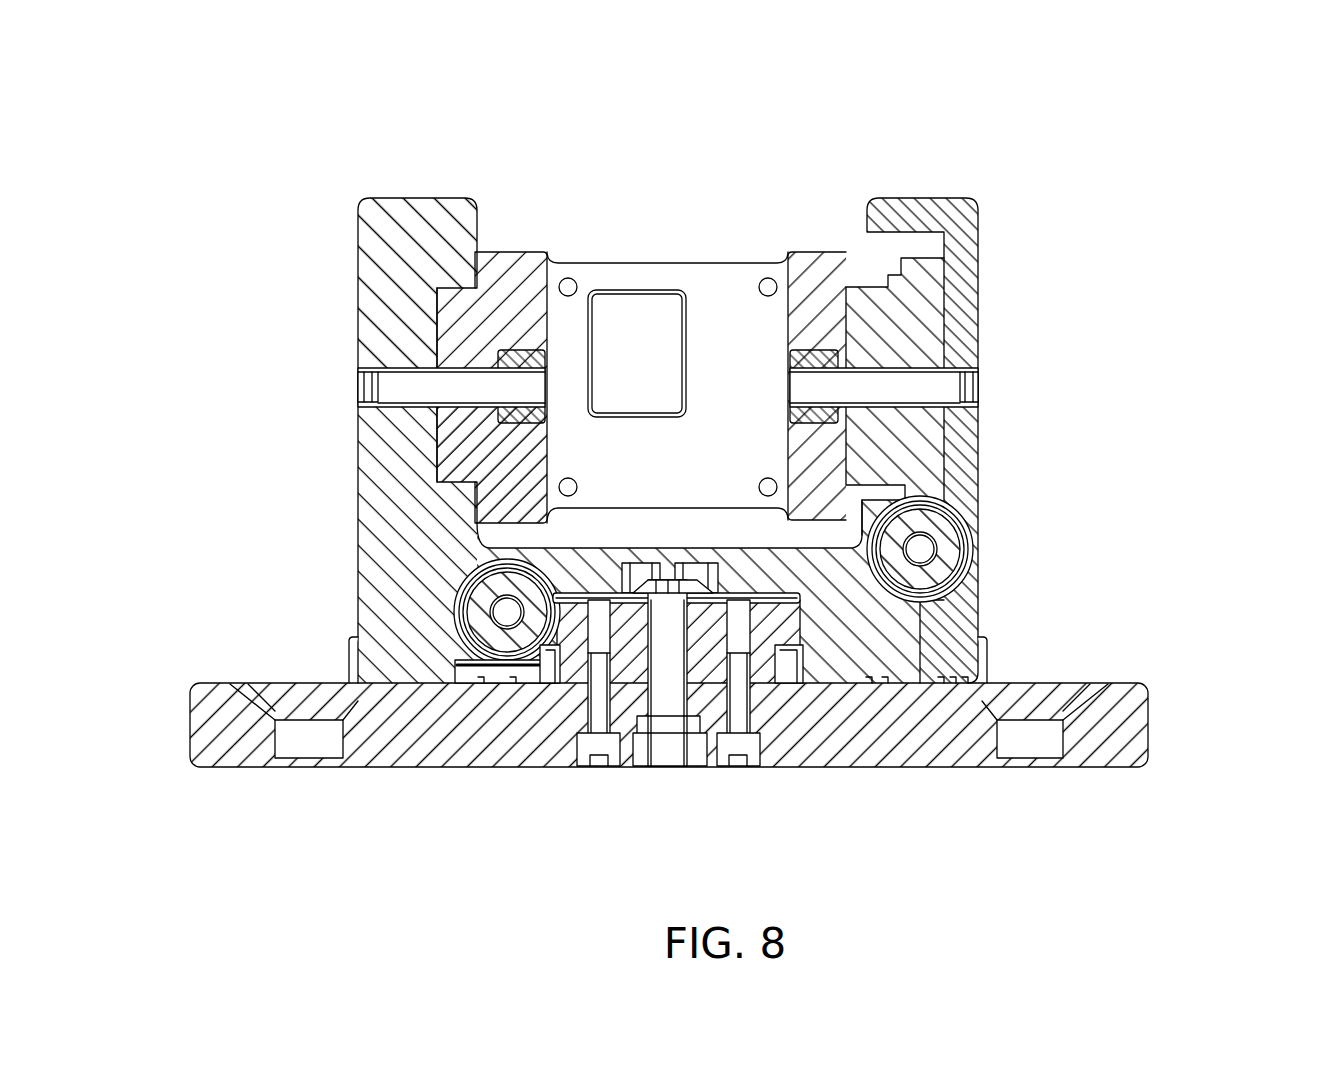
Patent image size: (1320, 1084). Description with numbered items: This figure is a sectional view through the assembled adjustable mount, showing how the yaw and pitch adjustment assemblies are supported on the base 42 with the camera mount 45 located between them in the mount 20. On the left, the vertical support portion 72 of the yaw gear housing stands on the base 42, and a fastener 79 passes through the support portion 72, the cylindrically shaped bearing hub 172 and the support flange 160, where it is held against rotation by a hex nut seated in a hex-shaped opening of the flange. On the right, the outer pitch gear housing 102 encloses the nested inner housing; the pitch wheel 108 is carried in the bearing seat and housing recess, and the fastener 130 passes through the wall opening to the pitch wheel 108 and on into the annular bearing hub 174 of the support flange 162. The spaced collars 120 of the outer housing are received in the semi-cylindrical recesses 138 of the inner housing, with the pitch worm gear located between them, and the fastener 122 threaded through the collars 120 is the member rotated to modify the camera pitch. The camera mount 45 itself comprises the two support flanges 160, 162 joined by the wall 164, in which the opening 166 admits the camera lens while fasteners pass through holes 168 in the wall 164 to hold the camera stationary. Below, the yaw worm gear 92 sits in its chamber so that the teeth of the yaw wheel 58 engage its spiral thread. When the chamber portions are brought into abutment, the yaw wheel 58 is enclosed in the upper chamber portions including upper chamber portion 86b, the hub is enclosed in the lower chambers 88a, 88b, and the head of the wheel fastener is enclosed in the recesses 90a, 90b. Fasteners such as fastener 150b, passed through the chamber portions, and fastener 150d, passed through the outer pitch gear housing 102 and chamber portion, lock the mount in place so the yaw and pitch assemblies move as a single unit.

The mount 20 is at (914, 112).
The base 42 is at (206, 788).
The camera mount 45 is at (667, 300).
The yaw wheel 58 is at (560, 622).
The support portion 72 is at (410, 218).
The left adjustment screw 79 is at (360, 368).
The upper chamber portion 86b is at (797, 622).
The lower chamber 88a is at (505, 556).
The lower chamber 88b is at (760, 680).
The recess 90a is at (636, 575).
The recess 90b is at (700, 577).
The yaw worm gear 92 is at (482, 640).
The outer pitch gear housing 102 is at (962, 220).
The pitch wheel 108 is at (922, 495).
The collar 120 is at (935, 596).
The fastener 122 is at (925, 552).
The fastener 130 is at (972, 382).
The semi-cylindrical recess 138 is at (876, 555).
The fastener 150b is at (993, 664).
The fastener 150d is at (349, 660).
The support flange 160 is at (508, 252).
The support flange 162 is at (810, 262).
The wall 164 is at (722, 288).
The opening 166 is at (654, 361).
The mounting holes 168 is at (572, 478).
The bearing hub 172 is at (457, 287).
The annular bearing hub 174 is at (863, 277).